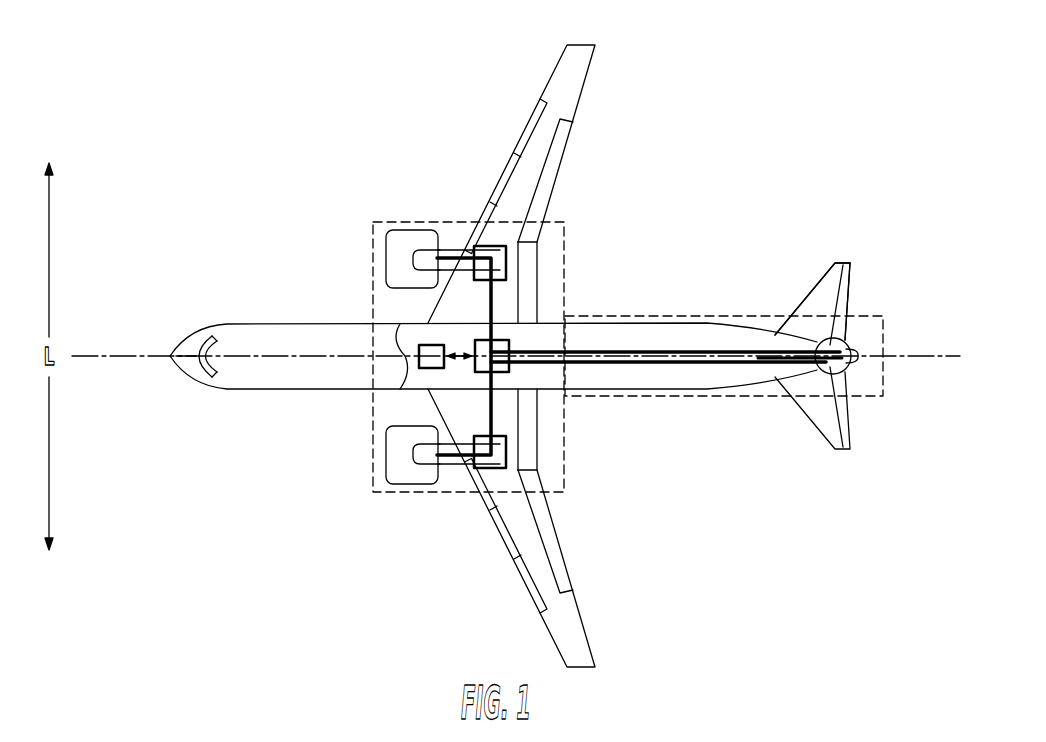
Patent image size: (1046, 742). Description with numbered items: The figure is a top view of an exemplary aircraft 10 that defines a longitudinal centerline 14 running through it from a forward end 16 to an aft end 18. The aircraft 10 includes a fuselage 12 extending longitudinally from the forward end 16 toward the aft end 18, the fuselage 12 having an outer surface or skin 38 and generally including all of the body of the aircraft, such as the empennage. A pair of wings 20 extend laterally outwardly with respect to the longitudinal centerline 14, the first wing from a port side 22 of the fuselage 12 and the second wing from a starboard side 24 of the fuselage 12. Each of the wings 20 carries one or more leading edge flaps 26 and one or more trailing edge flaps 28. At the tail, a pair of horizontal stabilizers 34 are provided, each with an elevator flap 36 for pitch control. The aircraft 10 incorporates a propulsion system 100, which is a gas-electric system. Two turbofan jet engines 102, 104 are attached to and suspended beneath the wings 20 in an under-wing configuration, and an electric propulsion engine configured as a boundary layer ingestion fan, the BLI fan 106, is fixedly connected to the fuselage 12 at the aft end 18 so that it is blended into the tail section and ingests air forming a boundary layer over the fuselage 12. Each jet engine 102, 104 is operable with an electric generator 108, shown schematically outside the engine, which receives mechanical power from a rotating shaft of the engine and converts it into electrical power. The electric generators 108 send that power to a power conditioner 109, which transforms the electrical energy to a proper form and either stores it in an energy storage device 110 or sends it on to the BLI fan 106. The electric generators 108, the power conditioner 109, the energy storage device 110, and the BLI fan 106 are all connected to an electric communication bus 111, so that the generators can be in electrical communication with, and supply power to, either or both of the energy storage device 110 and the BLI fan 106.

The aircraft 10 is at (709, 140).
The fuselage 12 is at (224, 378).
The longitudinal centerline 14 is at (96, 356).
The forward end 16 is at (170, 378).
The aft end 18 is at (808, 450).
The wings 20 is at (578, 68).
The port side 22 is at (299, 405).
The starboard side 24 is at (305, 314).
The leading edge flaps 26 is at (500, 537).
The trailing edge flaps 28 is at (558, 543).
The horizontal stabilizers 34 is at (822, 283).
The elevator flap 36 is at (848, 285).
The outer surface or skin 38 is at (661, 373).
The propulsion system 100 is at (652, 312).
The turbofan jet engine 102 is at (392, 481).
The turbofan jet engine 104 is at (401, 234).
The boundary layer ingestion (BLI) fan 106 is at (851, 332).
The electric generators 108 is at (506, 262).
The power conditioner 109 is at (503, 339).
The energy storage device 110 is at (420, 368).
The electric communication bus 111 is at (549, 373).